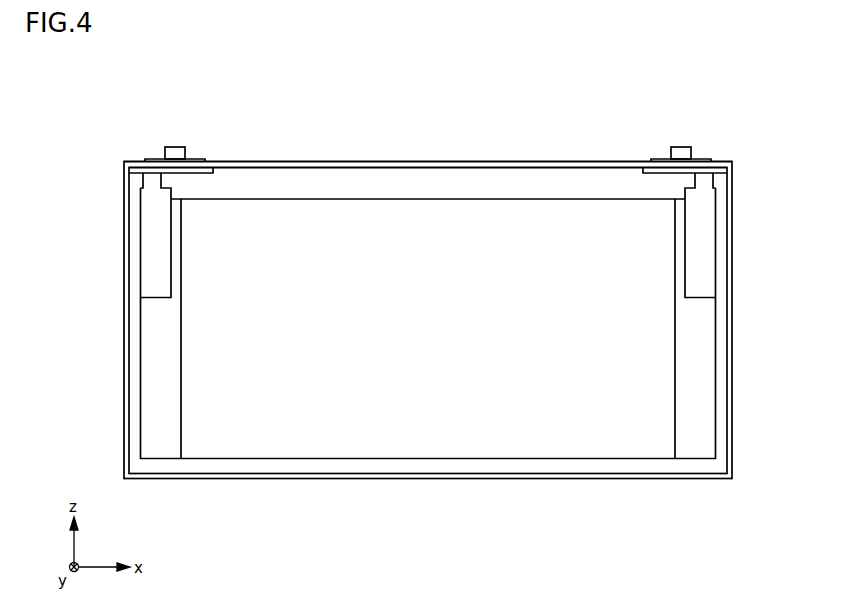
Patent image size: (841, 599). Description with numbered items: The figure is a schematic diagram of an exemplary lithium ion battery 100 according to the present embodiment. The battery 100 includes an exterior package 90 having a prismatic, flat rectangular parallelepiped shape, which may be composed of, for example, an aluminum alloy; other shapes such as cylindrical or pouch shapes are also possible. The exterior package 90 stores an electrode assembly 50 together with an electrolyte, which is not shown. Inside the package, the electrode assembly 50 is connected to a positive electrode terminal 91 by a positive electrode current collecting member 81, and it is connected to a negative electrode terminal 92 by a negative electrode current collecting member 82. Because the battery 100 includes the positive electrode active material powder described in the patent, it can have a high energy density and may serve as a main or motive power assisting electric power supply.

The battery 100 is at (778, 92).
The exterior package 90 is at (424, 158).
The negative electrode terminal 92 is at (172, 146).
The positive electrode terminal 91 is at (681, 146).
The negative electrode current collecting member 82 is at (150, 244).
The positive electrode current collecting member 81 is at (702, 247).
The electrode assembly 50 is at (428, 417).